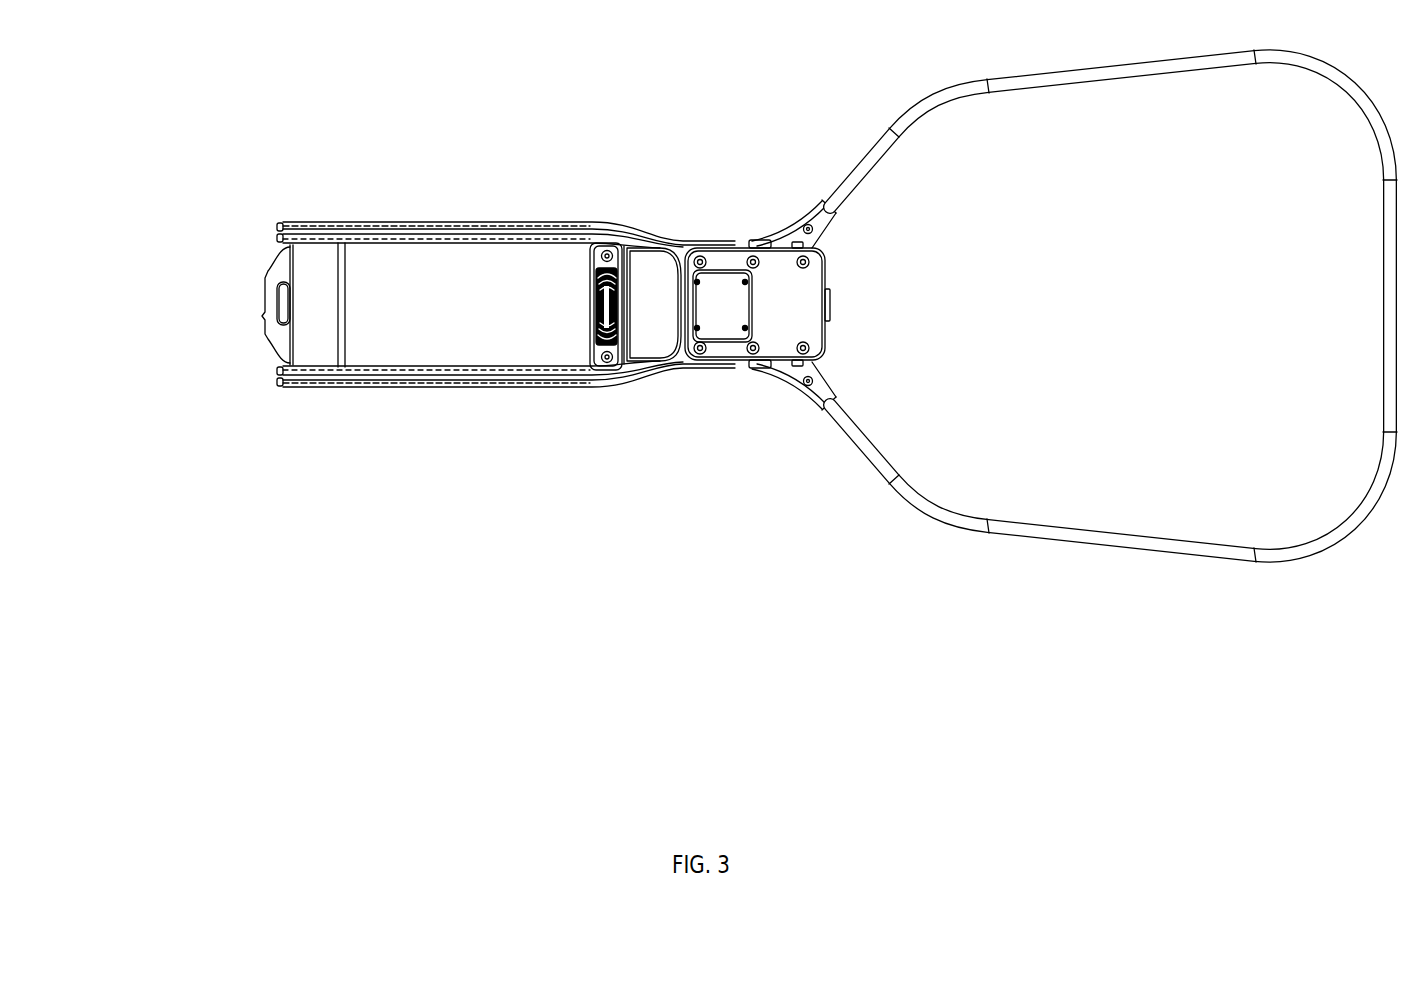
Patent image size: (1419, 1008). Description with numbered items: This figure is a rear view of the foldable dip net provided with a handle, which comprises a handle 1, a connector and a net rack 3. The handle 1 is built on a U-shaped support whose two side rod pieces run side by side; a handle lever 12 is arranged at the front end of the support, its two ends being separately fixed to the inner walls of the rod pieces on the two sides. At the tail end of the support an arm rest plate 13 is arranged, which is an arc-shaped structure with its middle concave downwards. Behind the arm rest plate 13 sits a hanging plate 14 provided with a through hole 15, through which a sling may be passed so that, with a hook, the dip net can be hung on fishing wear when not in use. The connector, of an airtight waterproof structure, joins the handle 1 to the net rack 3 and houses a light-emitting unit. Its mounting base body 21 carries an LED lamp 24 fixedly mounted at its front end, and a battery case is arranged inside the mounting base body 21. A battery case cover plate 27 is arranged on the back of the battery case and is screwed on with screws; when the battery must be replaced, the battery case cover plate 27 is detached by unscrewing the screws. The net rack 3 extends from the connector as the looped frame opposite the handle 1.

The handle 1 is at (438, 378).
The net rack 3 is at (1117, 545).
The handle lever 12 is at (590, 357).
The arm rest plate 13 is at (325, 287).
The hanging plate 14 is at (283, 330).
The through hole 15 is at (283, 292).
The mounting base body 21 is at (722, 260).
The LED lamp 24 is at (829, 303).
The battery case cover plate 27 is at (717, 315).